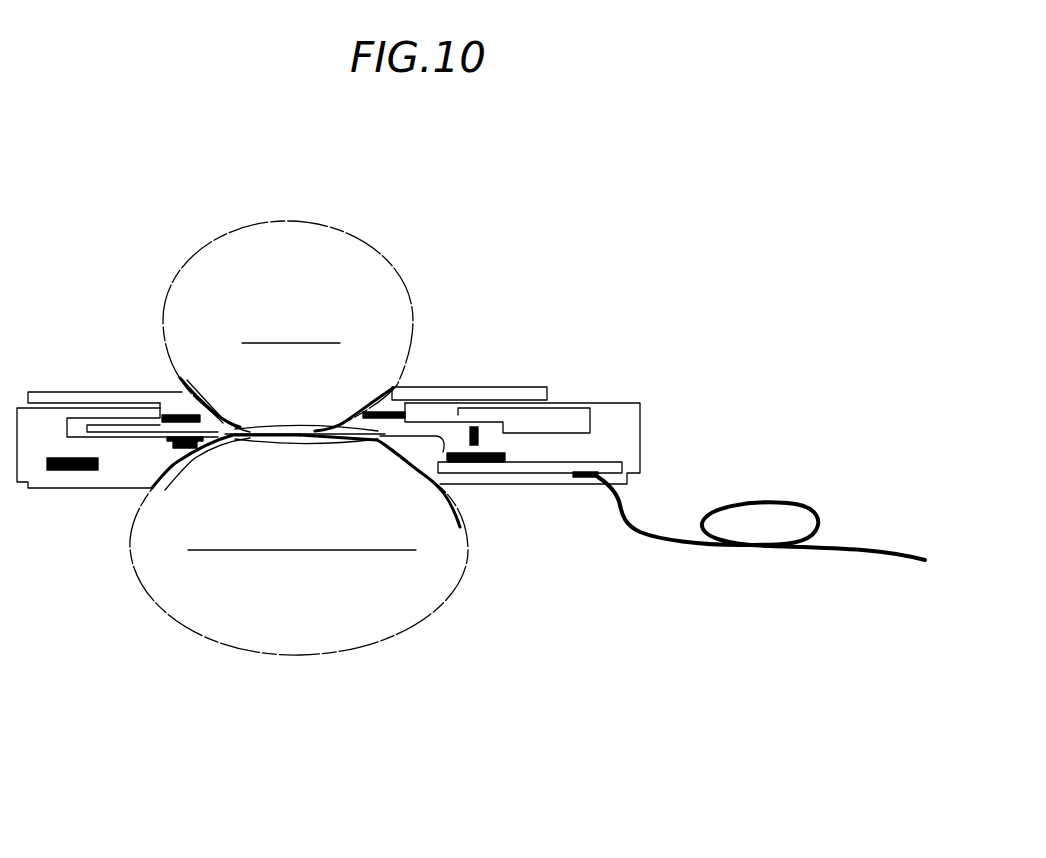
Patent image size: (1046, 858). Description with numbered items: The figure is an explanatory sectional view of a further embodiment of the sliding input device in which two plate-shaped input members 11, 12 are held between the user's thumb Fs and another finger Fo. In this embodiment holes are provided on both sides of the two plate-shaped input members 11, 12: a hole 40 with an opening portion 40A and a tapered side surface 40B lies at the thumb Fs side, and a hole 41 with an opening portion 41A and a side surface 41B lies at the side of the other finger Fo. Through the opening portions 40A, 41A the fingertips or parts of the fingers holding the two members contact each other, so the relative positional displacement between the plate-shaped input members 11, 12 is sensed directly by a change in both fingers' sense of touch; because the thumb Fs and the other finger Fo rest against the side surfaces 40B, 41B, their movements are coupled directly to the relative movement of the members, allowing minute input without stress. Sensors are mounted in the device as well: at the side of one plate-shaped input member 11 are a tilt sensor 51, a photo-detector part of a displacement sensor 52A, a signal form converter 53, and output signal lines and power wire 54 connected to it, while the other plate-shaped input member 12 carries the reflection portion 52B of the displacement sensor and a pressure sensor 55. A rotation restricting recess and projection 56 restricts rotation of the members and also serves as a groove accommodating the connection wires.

The plate-shaped input member 11 is at (640, 425).
The plate-shaped input member 12 is at (547, 389).
The hole 40 is at (284, 375).
The opening portion 40A is at (338, 427).
The side surface 40B is at (193, 385).
The hole 41 is at (303, 548).
The opening portion 41A is at (370, 446).
The side surface 41B is at (183, 462).
The tilt sensor 51 is at (52, 470).
The part of displacement sensor 52A is at (193, 448).
The reflection portion of the displacement sensor 52B is at (127, 440).
The signal form converter 53 is at (553, 473).
The output signal lines and power wire 54 is at (680, 544).
The pressure sensor 55 is at (178, 418).
The rotation restricting recess and projection 56 is at (473, 440).
The thumb Fs is at (397, 271).
The other fingers Fo is at (372, 640).